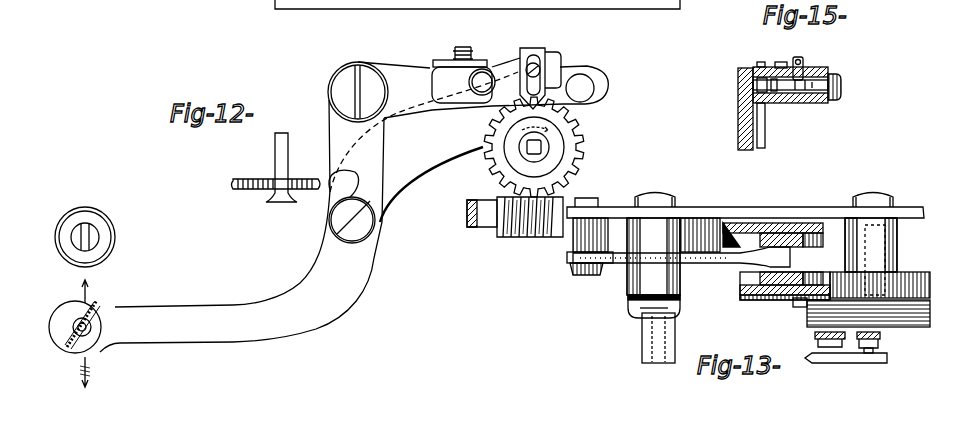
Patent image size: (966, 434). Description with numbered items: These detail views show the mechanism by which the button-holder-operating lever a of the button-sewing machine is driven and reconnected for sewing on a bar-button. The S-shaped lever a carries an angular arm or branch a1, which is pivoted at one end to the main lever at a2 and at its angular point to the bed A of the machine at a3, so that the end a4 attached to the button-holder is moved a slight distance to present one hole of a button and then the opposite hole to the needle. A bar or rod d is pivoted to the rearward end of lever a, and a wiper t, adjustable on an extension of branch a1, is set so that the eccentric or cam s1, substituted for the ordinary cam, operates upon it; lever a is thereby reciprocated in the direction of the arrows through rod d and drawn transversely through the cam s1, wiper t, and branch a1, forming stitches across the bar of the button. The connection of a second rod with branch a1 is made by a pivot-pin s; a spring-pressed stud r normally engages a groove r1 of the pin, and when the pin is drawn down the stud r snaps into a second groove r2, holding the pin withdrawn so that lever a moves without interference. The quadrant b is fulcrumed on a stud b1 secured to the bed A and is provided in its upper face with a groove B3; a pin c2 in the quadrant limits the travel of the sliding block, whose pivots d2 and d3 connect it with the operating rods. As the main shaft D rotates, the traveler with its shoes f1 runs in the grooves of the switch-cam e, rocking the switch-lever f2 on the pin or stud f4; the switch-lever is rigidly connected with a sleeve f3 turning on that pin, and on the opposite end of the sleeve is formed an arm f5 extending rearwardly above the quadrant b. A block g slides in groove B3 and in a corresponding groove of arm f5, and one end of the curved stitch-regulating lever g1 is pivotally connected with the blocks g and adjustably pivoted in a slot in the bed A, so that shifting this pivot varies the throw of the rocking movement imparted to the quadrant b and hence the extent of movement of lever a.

In FIG. 12, the lever a is at (354, 205).
In FIG. 15, the lever a is at (812, 104).
In FIG. 12, the angular arm or branch a1 is at (424, 132).
In FIG. 12, the pivot a2 is at (352, 220).
In FIG. 12, the pivotal point a3 is at (358, 92).
In FIG. 12, the end of lever a4 is at (75, 333).
In FIG. 12, the pivot-pin s is at (463, 75).
In FIG. 15, the pivot-pin s is at (842, 86).
In FIG. 12, the eccentric or cam s1 is at (533, 147).
In FIG. 12, the wiper t is at (550, 55).
In FIG. 12, the bar or rod d is at (600, 96).
In FIG. 15, the bar or rod d is at (762, 140).
In FIG. 12, the main shaft D is at (487, 215).
In FIG. 13, the bed A is at (907, 207).
In FIG. 15, the bed A is at (738, 108).
In FIG. 13, the pin or stud f4 is at (655, 200).
In FIG. 13, the arm f5 is at (708, 230).
In FIG. 13, the sleeve f3 is at (681, 280).
In FIG. 13, the shoes f1 is at (630, 311).
In FIG. 13, the switch-lever f2 is at (646, 332).
In FIG. 13, the stitch-regulating lever g1 is at (618, 262).
In FIG. 13, the block g is at (742, 277).
In FIG. 13, the groove B3 is at (753, 227).
In FIG. 13, the stud b1 is at (875, 193).
In FIG. 13, the quadrant b is at (868, 272).
In FIG. 13, the pin c2 is at (793, 307).
In FIG. 13, the pivotal point d3 is at (817, 338).
In FIG. 13, the pivot d2 is at (885, 348).
In FIG. 13, the switch-cam e is at (855, 363).
In FIG. 15, the spring-pressed stud r is at (801, 62).
In FIG. 15, the groove r1 is at (797, 104).
In FIG. 15, the groove r2 is at (781, 67).